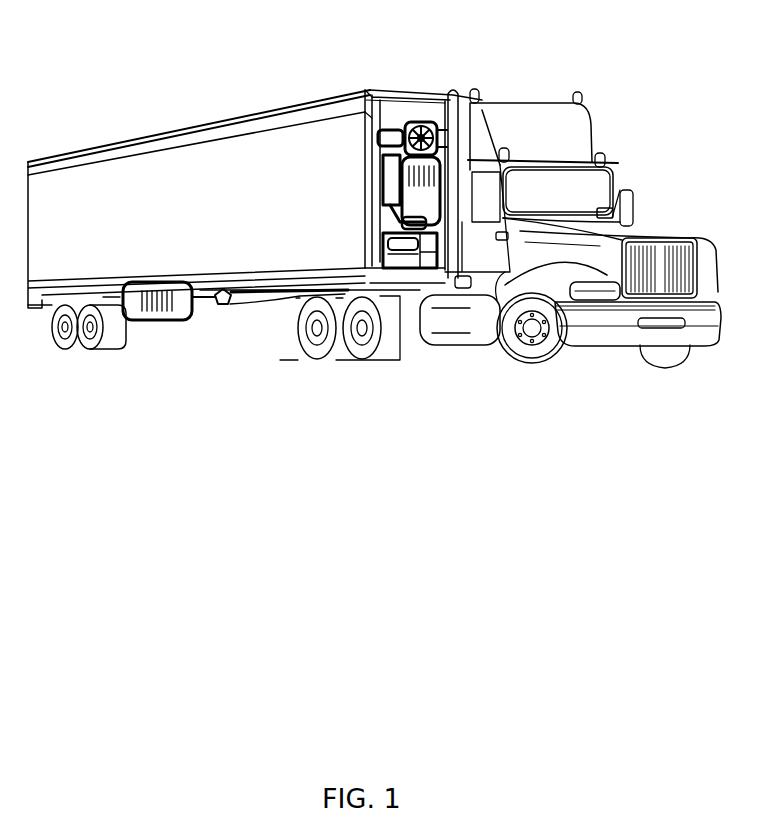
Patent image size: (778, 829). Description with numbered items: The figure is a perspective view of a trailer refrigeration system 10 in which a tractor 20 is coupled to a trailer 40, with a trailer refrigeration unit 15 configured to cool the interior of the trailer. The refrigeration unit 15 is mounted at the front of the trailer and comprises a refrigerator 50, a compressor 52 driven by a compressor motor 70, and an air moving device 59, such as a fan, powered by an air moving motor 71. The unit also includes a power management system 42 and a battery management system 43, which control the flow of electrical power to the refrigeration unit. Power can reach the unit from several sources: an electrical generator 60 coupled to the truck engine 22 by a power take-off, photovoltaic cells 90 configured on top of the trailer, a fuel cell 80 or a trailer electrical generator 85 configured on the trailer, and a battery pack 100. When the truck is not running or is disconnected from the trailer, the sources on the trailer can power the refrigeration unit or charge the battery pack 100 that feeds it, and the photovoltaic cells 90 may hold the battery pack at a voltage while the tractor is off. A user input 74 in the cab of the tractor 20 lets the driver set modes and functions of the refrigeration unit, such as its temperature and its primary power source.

The trailer refrigeration system 10 is at (482, 89).
The trailer refrigeration unit 15 is at (412, 118).
The tractor 20 is at (548, 140).
The truck engine 22 is at (661, 252).
The trailer 40 is at (270, 150).
The power management system 42 is at (390, 180).
The battery management system 43 is at (178, 319).
The refrigerator 50 is at (456, 93).
The compressor 52 is at (368, 95).
The air moving device 59 is at (430, 122).
The electrical generator 60 is at (690, 238).
The compressor motor 70 is at (388, 208).
The air moving motor 71 is at (386, 130).
The user input 74 is at (604, 210).
The fuel cell 80 is at (120, 348).
The trailer electrical generator 85 is at (395, 269).
The photovoltaic cells 90 is at (166, 136).
The battery pack 100 is at (266, 301).